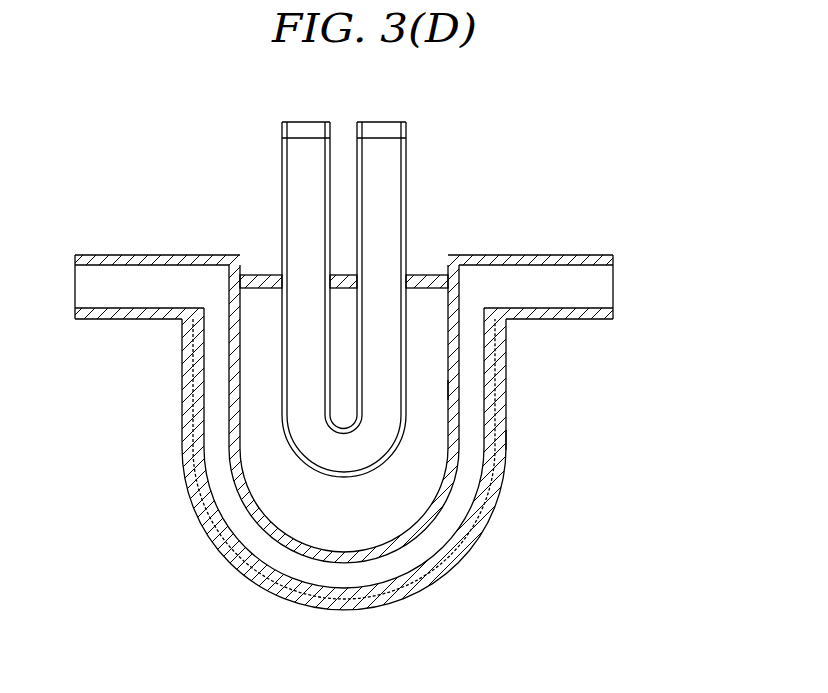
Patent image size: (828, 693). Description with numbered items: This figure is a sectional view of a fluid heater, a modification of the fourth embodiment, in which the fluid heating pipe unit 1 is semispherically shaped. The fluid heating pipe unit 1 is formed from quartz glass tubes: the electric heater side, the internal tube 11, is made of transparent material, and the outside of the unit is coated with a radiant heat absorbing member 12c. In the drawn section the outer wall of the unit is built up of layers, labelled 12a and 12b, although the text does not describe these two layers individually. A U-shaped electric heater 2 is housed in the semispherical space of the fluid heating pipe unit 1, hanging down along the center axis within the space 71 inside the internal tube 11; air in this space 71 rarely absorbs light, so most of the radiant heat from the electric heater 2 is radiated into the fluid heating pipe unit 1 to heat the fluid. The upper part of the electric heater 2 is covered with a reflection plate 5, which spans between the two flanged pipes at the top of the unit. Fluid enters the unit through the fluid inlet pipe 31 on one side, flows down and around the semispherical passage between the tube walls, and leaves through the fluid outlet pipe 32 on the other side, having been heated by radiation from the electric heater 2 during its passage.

The fluid heating pipe unit 1 is at (217, 537).
The electric heater 2 is at (282, 131).
The reflection plate 5 is at (428, 275).
The internal tube 11 is at (438, 496).
The quartz outer tube 12a is at (255, 570).
The heat reflector 12b is at (498, 506).
The radiant heat absorbing member 12c is at (503, 440).
The fluid inlet pipe 31 is at (150, 254).
The fluid outlet pipe 32 is at (546, 255).
The space 71 is at (448, 392).